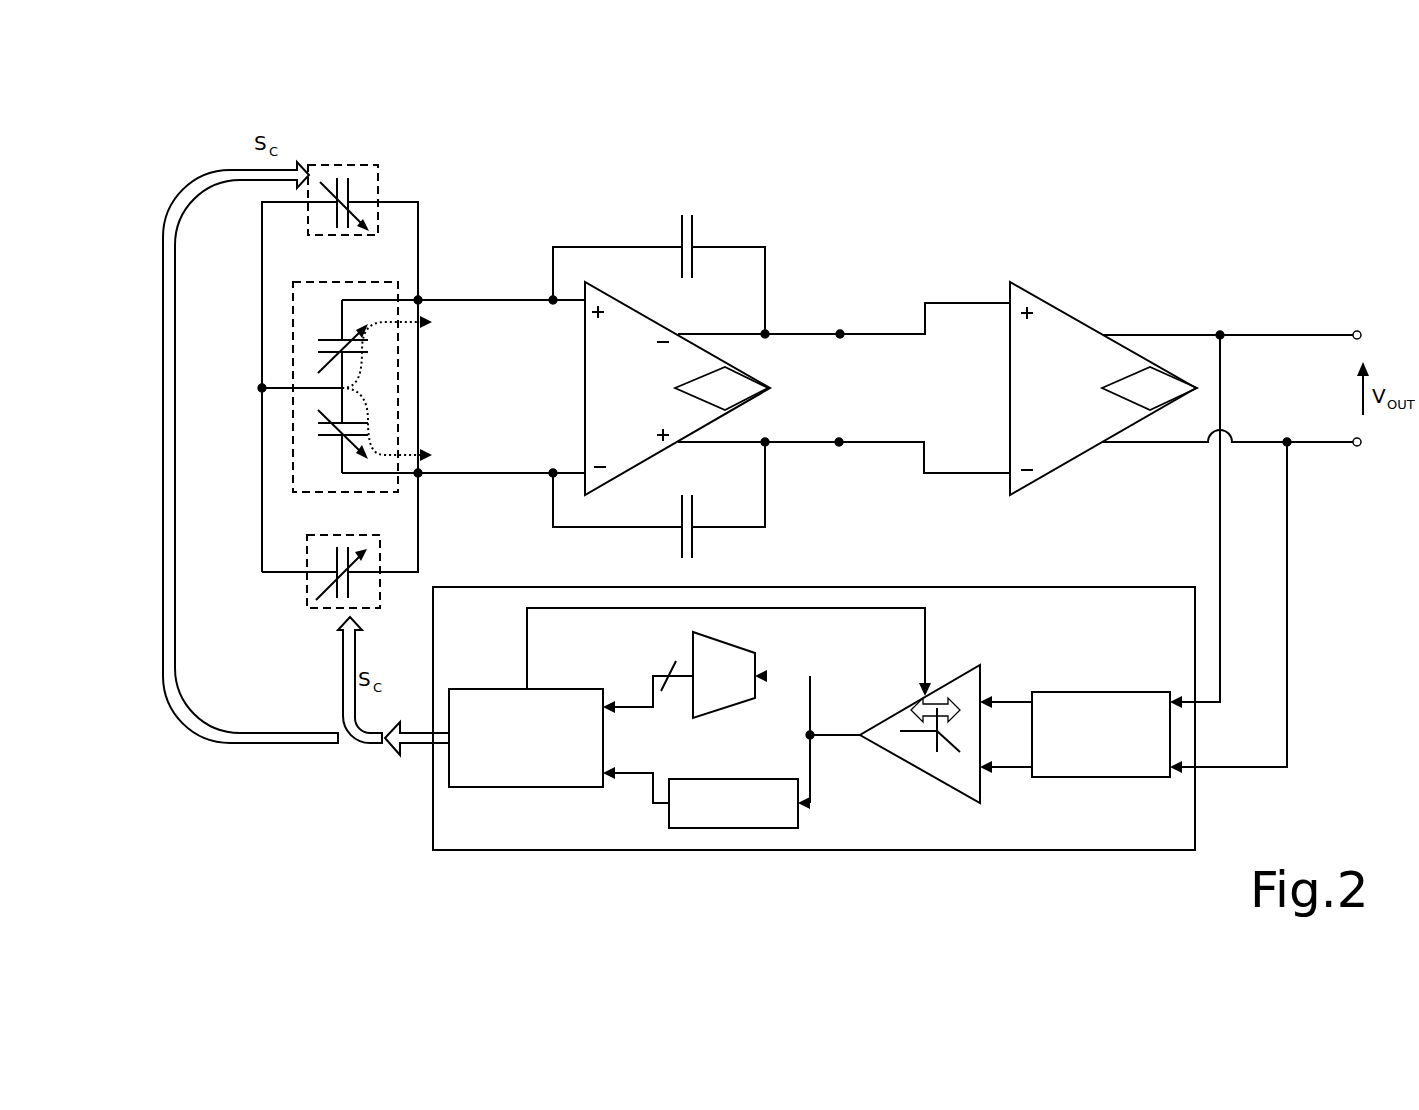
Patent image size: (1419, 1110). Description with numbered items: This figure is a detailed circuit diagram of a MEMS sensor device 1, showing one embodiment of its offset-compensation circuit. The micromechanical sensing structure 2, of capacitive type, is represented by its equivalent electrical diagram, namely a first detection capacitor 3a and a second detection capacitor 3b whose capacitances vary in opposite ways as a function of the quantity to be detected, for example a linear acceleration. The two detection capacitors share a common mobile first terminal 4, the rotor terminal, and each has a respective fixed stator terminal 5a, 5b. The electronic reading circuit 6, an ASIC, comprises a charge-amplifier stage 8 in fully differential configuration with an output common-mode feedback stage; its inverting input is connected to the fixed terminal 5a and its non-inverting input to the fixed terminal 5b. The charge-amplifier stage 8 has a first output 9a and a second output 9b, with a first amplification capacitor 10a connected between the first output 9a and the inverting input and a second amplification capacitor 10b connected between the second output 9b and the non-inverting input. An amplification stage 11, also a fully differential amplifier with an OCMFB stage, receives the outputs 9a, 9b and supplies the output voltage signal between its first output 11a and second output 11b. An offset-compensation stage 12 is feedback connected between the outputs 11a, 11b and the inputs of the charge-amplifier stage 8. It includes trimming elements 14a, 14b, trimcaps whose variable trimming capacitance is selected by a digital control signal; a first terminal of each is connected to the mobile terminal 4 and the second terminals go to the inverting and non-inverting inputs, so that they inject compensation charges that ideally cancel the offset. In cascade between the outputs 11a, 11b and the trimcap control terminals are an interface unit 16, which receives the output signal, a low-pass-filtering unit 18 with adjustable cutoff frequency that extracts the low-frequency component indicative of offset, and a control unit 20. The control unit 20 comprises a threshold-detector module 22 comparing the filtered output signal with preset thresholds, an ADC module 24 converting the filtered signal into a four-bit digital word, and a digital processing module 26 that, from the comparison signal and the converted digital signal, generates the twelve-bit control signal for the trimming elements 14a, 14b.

The MEMS sensor device 1 is at (1221, 270).
The micromechanical sensing structure 2 is at (338, 436).
The first detection capacitor 3a is at (355, 425).
The second detection capacitor 3b is at (355, 355).
The first terminal 4 is at (262, 388).
The fixed terminal of first detection capacitor 5a is at (418, 475).
The fixed terminal of second detection capacitor 5b is at (420, 300).
The electronic reading circuit 6 is at (844, 354).
The charge-amplifier stage 8 is at (602, 400).
The first output 9a is at (840, 445).
The second output 9b is at (840, 334).
The first amplification capacitor 10a is at (693, 545).
The second amplification capacitor 10b is at (693, 237).
The amplification stage 11 is at (1072, 330).
The first output of amplification stage 11a is at (1357, 446).
The second output of amplification stage 11b is at (1357, 331).
The offset-compensation stage 12 is at (822, 858).
The first trimming element 14a is at (307, 588).
The second trimming element 14b is at (360, 165).
The interface unit 16 is at (1138, 772).
The low-pass-filtering unit 18 is at (918, 755).
The control unit 20 is at (612, 836).
The threshold-detector module 22 is at (740, 830).
The ADC module 24 is at (720, 692).
The processing module 26 is at (481, 788).